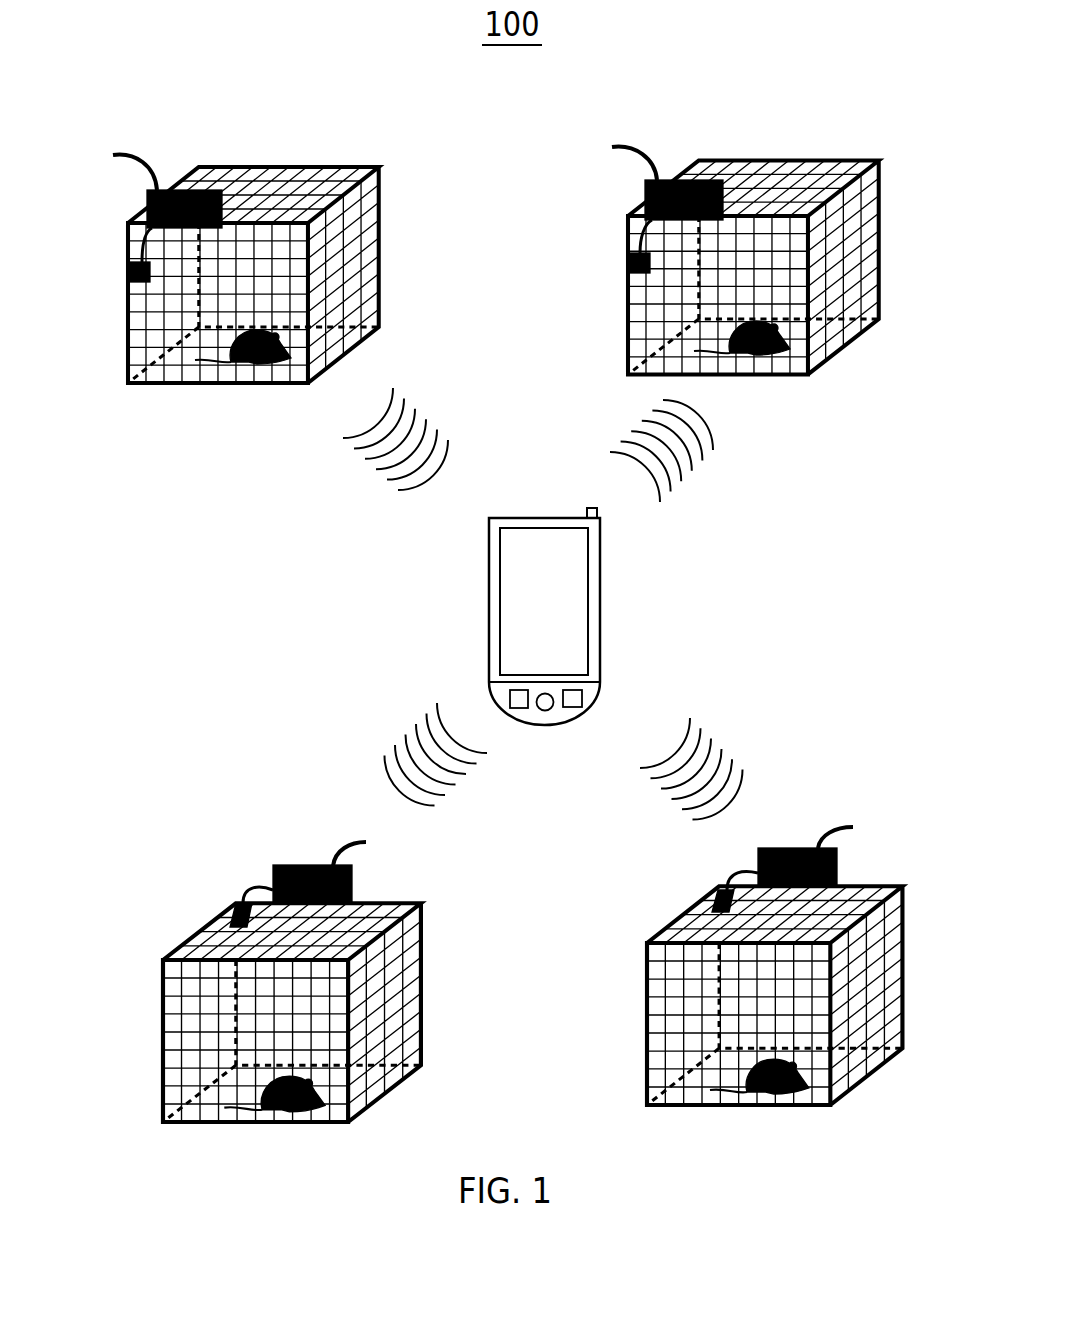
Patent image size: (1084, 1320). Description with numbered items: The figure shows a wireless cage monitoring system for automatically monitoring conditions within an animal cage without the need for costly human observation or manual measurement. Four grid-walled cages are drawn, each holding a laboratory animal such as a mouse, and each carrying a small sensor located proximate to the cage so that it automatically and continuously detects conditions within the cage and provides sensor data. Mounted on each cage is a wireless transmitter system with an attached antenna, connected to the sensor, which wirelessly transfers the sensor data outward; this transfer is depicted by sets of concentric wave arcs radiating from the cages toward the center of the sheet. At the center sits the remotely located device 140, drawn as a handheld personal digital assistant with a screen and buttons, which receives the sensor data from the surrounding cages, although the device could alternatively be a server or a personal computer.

The remotely located device 140 is at (489, 623).